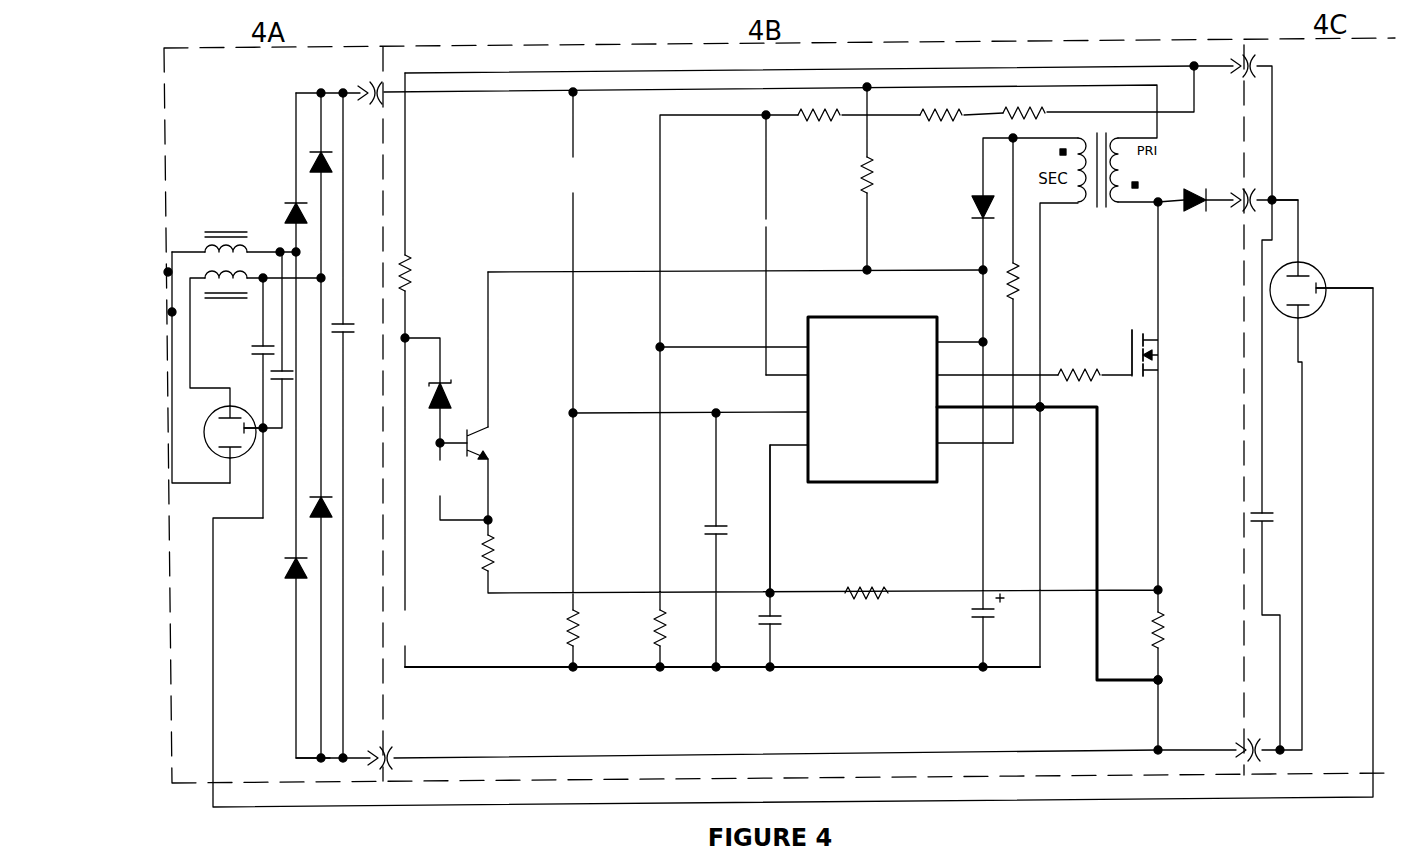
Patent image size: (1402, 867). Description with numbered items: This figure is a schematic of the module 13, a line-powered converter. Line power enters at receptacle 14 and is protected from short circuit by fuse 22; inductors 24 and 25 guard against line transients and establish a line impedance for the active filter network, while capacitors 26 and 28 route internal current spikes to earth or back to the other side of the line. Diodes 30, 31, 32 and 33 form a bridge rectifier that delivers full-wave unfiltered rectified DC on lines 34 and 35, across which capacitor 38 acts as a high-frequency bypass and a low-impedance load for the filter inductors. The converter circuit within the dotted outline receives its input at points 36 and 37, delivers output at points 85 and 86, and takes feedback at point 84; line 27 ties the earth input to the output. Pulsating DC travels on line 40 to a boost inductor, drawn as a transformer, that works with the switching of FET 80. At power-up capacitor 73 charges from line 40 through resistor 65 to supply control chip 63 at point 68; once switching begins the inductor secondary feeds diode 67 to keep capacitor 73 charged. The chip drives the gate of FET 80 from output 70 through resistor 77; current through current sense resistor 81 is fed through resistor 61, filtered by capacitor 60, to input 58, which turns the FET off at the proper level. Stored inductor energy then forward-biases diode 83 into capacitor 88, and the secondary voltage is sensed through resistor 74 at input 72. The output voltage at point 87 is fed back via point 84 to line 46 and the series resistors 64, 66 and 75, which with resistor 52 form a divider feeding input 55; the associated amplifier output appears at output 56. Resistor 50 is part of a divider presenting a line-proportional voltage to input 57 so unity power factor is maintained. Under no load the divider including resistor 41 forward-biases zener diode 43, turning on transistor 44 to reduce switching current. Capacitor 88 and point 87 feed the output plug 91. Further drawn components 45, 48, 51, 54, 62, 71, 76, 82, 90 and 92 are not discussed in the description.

The module 13 is at (473, 812).
The receptacle 14 is at (220, 455).
The fuse 22 is at (172, 312).
The inductor 24 is at (223, 230).
The inductor 25 is at (238, 286).
The capacitor 26 is at (256, 352).
The line 27 is at (264, 522).
The capacitor 28 is at (290, 376).
The diode 30 is at (290, 220).
The diode 31 is at (288, 573).
The diode 32 is at (315, 168).
The diode 33 is at (330, 514).
The line 34 is at (312, 93).
The line 35 is at (296, 758).
The input connection point 36 is at (378, 86).
The input connection point 37 is at (396, 752).
The capacitor 38 is at (346, 322).
The line 40 is at (478, 90).
The resistor 41 is at (412, 278).
The zener diode 43 is at (445, 380).
The transistor 44 is at (494, 447).
The resistor 45 is at (494, 566).
The line 46 is at (655, 76).
The ground bus 48 is at (540, 672).
The resistor 50 is at (568, 631).
The return line 51 is at (706, 756).
The resistor 52 is at (655, 631).
The capacitor 54 is at (722, 528).
The input 55 is at (796, 348).
The output 56 is at (798, 378).
The input 57 is at (798, 413).
The input 58 is at (782, 448).
The capacitor 60 is at (781, 620).
The resistor 61 is at (876, 586).
The reference line 62 is at (838, 272).
The control chip 63 is at (888, 316).
The resistor 64 is at (820, 122).
The resistor 65 is at (876, 178).
The resistor 66 is at (946, 119).
The diode 67 is at (970, 201).
The point 68 is at (962, 338).
The output 70 is at (970, 376).
The control chip pin 71 is at (975, 402).
The input 72 is at (975, 438).
The capacitor 73 is at (970, 618).
The resistor 74 is at (1020, 291).
The resistor 75 is at (1050, 110).
The junction 76 is at (1044, 410).
The resistor 77 is at (1086, 370).
The FET 80 is at (1150, 346).
The current sense resistor 81 is at (1166, 636).
The junction 82 is at (1165, 679).
The diode 83 is at (1192, 190).
The feedback point 84 is at (1268, 66).
The output point 85 is at (1250, 186).
The output point 86 is at (1255, 738).
The point 87 is at (1278, 196).
The capacitor 88 is at (1268, 512).
The lamp lead 90 is at (1300, 210).
The output plug 91 is at (1320, 272).
The lamp lead 92 is at (1304, 363).